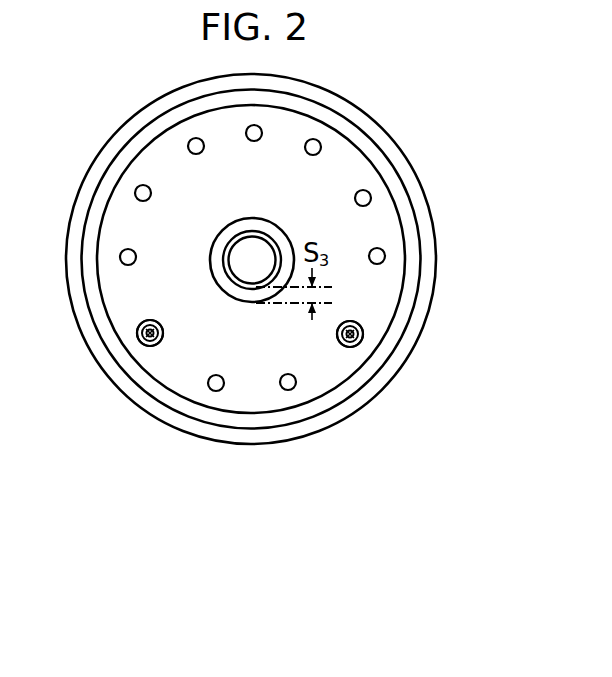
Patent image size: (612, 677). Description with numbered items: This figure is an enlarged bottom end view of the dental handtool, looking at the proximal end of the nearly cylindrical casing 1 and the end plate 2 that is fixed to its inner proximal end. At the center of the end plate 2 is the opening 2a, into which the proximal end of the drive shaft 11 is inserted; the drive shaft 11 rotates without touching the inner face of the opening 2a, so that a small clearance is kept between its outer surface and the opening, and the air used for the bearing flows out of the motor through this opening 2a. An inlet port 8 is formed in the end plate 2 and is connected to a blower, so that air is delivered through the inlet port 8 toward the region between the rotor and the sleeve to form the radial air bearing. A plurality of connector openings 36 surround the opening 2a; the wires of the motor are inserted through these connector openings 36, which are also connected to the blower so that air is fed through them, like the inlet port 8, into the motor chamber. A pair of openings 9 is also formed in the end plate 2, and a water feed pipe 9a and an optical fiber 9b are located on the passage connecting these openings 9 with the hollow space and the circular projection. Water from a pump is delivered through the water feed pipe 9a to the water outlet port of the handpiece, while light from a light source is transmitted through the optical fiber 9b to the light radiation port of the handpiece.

The casing 1 is at (125, 385).
The end plate 2 is at (123, 323).
The opening 2a is at (213, 274).
The drive shaft 11 is at (246, 243).
The inlet port 8 is at (254, 141).
The connector openings 36 is at (199, 154).
The openings 9 is at (163, 336).
The water feed pipe 9a is at (354, 321).
The optical fiber 9b is at (148, 320).